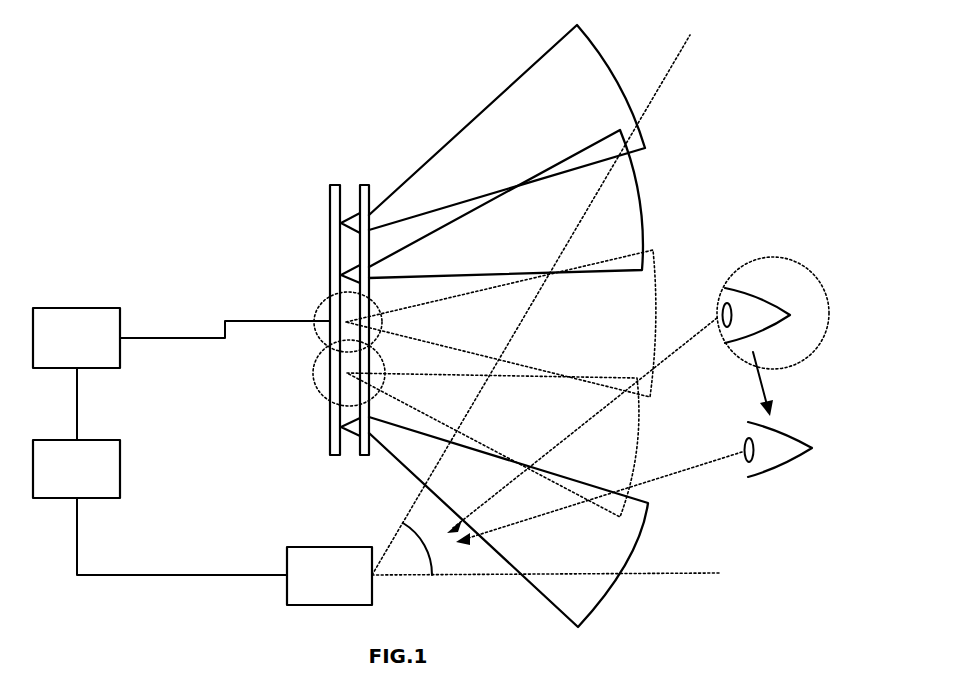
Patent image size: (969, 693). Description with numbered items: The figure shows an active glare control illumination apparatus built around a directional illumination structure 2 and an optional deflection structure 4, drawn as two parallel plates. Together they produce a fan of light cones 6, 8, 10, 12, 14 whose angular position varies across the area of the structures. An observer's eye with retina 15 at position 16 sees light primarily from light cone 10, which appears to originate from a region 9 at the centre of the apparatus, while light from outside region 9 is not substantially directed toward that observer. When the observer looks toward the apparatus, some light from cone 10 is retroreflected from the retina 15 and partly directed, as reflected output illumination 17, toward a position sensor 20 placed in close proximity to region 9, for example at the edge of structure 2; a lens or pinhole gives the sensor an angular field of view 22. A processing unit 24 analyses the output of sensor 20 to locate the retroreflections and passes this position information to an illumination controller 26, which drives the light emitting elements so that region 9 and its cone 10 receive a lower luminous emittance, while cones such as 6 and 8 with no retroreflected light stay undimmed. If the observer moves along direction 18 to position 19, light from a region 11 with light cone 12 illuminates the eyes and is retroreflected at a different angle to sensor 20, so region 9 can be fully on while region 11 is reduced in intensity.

The directional illumination structure 2 is at (337, 186).
The deflection structure 4 is at (368, 185).
The light cone 6 is at (617, 73).
The light cone 8 is at (642, 203).
The region 9 is at (343, 292).
The light cone 10 is at (657, 293).
The region 11 is at (334, 410).
The light cone 12 is at (643, 460).
The light cone 14 is at (613, 598).
The retina 15 is at (830, 313).
The position 16 is at (767, 312).
The reflected output illumination 17 is at (594, 431).
The direction 18 is at (775, 387).
The position 19 is at (777, 448).
The position sensor 20 is at (329, 576).
The angular field of view 22 is at (420, 545).
The processing unit 24 is at (160, 471).
The illumination controller 26 is at (181, 338).